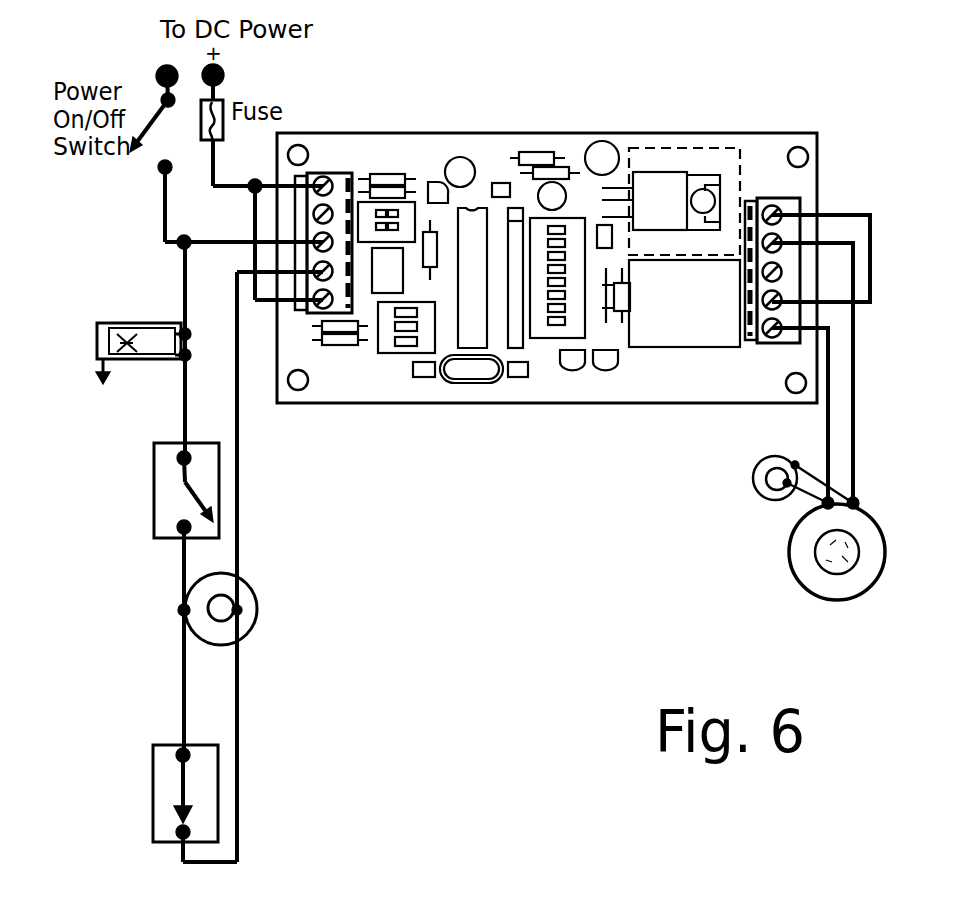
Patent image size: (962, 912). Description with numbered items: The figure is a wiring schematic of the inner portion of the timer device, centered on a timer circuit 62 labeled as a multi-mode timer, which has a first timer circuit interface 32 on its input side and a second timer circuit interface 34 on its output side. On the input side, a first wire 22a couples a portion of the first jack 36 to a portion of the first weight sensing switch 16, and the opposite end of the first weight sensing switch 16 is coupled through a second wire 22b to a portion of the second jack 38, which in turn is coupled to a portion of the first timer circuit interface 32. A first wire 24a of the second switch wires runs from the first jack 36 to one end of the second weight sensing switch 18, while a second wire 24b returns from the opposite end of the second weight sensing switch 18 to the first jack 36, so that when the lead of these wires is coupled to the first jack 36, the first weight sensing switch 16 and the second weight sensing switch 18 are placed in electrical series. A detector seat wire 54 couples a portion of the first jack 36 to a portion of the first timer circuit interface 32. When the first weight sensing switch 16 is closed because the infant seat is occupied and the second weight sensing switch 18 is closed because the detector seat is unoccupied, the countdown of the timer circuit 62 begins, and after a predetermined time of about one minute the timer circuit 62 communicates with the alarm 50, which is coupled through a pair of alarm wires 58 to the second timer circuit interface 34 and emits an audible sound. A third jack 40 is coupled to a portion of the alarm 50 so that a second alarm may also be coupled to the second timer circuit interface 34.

The first weight sensing switch SW1 16 is at (156, 510).
The second weight sensing switch SW2 18 is at (152, 801).
The first wire 22a is at (177, 575).
The second wire 22b is at (185, 412).
The first wire of the SW2 wires 24a is at (180, 683).
The second wire of the SW2 wires 24b is at (238, 767).
The first timer circuit interface 32 is at (341, 160).
The second timer circuit interface 34 is at (809, 200).
The first jack 36 is at (240, 590).
The second jack 38 is at (142, 323).
The third jack 40 is at (753, 472).
The alarm 50 is at (838, 603).
The detector seat wire 54 is at (238, 420).
The pair of alarm wires 58 is at (856, 425).
The timer circuit 62 is at (522, 423).